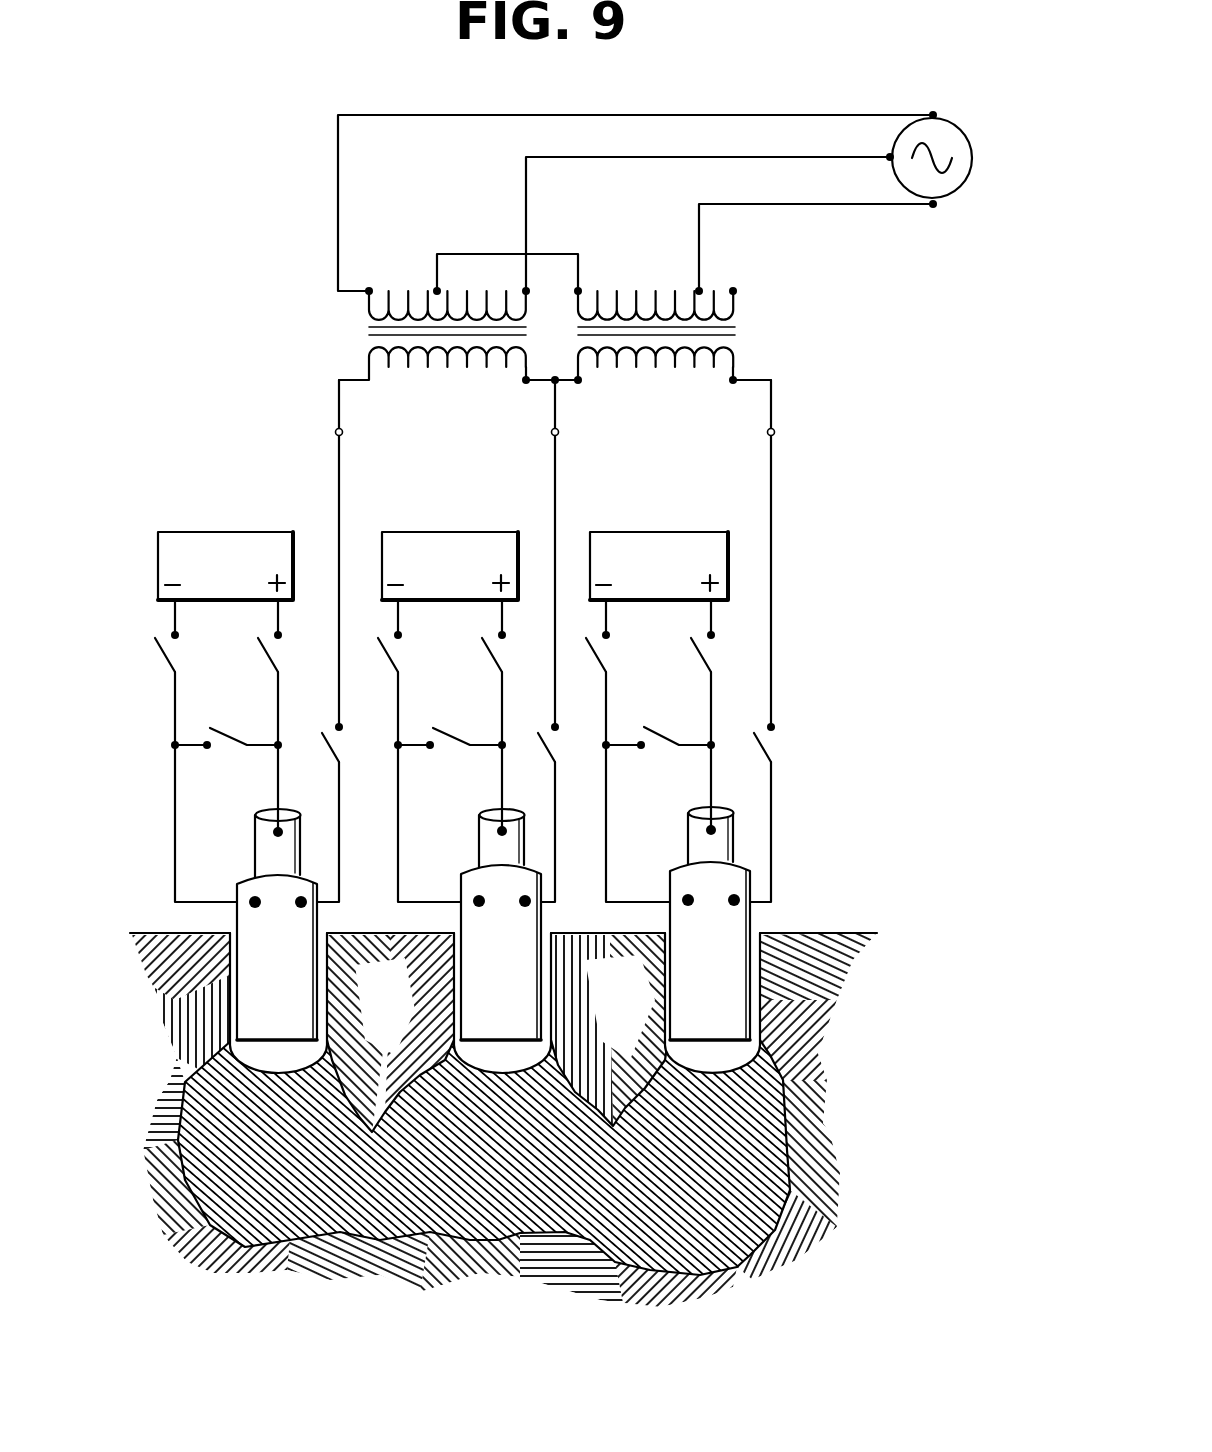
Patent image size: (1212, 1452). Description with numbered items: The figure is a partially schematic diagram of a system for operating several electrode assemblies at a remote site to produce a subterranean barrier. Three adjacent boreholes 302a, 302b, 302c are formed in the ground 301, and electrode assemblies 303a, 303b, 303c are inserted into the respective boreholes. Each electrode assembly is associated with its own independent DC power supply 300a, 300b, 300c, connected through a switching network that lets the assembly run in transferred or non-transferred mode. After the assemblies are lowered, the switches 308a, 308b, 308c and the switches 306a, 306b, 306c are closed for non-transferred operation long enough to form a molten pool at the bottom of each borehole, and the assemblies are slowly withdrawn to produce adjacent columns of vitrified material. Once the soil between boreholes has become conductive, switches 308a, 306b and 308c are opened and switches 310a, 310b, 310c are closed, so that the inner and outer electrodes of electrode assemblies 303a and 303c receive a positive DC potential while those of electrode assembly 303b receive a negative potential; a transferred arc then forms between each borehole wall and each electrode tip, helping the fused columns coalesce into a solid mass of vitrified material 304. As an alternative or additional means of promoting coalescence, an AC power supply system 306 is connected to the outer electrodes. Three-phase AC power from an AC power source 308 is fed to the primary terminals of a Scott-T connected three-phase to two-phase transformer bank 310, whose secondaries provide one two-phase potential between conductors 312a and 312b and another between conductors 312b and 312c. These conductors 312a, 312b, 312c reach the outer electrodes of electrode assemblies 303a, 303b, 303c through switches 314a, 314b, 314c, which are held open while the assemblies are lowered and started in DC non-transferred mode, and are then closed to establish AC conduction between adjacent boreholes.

The ground 301 is at (921, 1102).
The borehole 302a is at (228, 930).
The borehole 302b is at (452, 930).
The borehole 302c is at (663, 930).
The electrode assembly 303a is at (306, 990).
The electrode assembly 303b is at (530, 990).
The electrode assembly 303c is at (743, 990).
The vitrified material 304 is at (528, 1177).
The AC power supply system 306 is at (629, 335).
The AC power source 308 is at (947, 118).
The transformer bank 310 is at (574, 343).
The conductor 312a is at (343, 432).
The conductor 312b is at (559, 432).
The conductor 312c is at (775, 432).
The DC power supply 300a is at (249, 520).
The DC power supply 300b is at (473, 520).
The DC power supply 300c is at (689, 520).
The switch 308a is at (166, 656).
The switch 308b is at (389, 656).
The switch 308c is at (597, 656).
The switch 306a is at (268, 656).
The switch 306b is at (492, 658).
The switch 306c is at (701, 658).
The switch 310a is at (223, 738).
The switch 310b is at (446, 738).
The switch 310c is at (655, 738).
The switch 314a is at (324, 748).
The switch 314b is at (545, 748).
The switch 314c is at (762, 746).